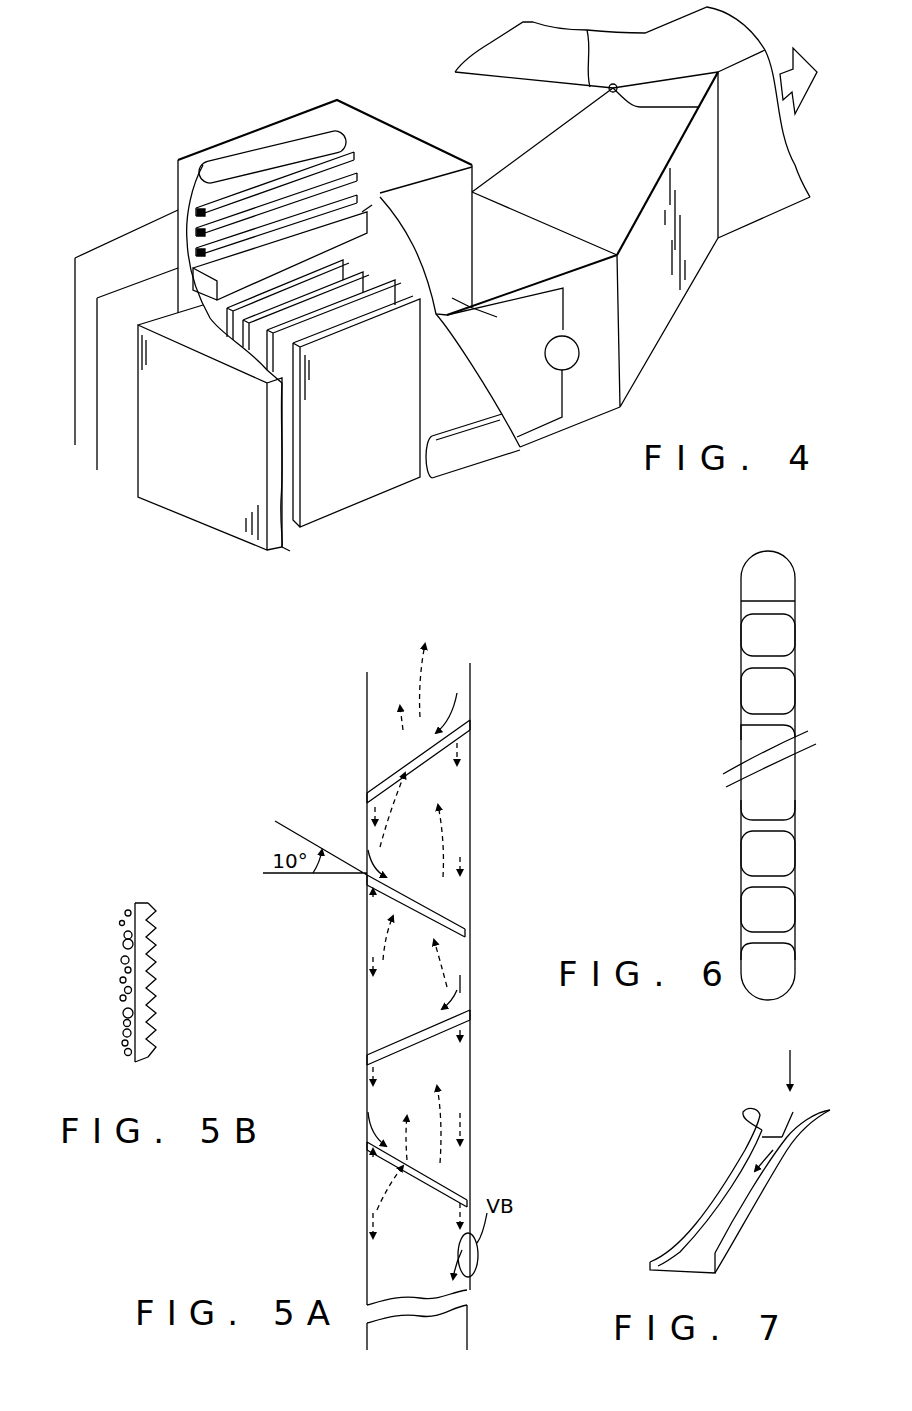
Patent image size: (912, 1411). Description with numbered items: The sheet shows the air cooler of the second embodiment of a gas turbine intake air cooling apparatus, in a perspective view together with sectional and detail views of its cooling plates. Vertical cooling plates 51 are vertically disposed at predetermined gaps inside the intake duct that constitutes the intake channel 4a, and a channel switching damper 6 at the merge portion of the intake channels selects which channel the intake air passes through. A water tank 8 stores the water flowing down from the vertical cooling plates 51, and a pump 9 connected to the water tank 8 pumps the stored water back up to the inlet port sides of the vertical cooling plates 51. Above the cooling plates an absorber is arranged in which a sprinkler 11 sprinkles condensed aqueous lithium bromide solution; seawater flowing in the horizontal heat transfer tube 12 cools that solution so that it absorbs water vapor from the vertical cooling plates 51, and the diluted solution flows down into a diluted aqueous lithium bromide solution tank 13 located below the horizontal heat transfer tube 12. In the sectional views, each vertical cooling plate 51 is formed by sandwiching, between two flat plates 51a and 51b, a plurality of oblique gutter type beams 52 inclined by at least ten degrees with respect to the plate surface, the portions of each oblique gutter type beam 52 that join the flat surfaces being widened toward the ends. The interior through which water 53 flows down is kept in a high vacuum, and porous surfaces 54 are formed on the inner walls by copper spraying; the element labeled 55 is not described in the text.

In FIG. 4, the intake channel 4a is at (583, 425).
In FIG. 4, the channel switching damper 6 is at (647, 95).
In FIG. 4, the water tank 8 is at (484, 445).
In FIG. 4, the pump 9 is at (577, 362).
In FIG. 4, the sprinkler 11 is at (310, 135).
In FIG. 4, the horizontal heat transfer tube 12 is at (97, 438).
In FIG. 4, the diluted aqueous lithium bromide solution tank 13 is at (362, 212).
In FIG. 4, the vertical cooling plate 51 is at (384, 482).
In FIG. 5A, the vertical cooling plate 51 is at (470, 820).
In FIG. 6, the vertical cooling plate 51 is at (741, 673).
In FIG. 5A, the flat plate 51a is at (367, 962).
In FIG. 5A, the flat plate 51b is at (470, 920).
In FIG. 5A, the oblique gutter type beam 52 is at (470, 720).
In FIG. 6, the oblique gutter type beam 52 is at (752, 653).
In FIG. 7, the oblique gutter type beam 52 is at (747, 1203).
In FIG. 5A, the water 53 is at (463, 985).
In FIG. 7, the water 53 is at (788, 1060).
In FIG. 5B, the porous surface 54 is at (124, 950).
In FIG. 5B, the serrated plate 55 is at (152, 918).